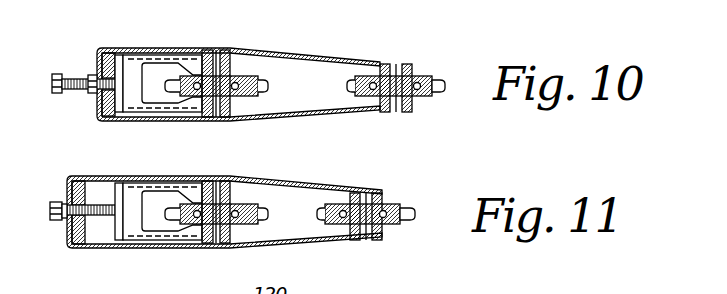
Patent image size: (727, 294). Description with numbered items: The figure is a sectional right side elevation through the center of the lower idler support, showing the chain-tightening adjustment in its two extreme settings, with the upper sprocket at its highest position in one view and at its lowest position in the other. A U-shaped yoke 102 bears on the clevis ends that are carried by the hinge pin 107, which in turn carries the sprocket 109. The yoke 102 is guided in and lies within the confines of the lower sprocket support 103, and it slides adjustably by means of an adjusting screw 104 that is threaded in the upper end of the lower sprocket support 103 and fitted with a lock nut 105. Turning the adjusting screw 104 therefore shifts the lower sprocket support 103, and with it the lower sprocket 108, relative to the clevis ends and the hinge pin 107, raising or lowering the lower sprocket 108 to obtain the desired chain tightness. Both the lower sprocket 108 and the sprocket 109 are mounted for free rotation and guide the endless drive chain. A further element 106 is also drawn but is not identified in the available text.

In FIG. 10, the U-shaped yoke 102 is at (160, 54).
In FIG. 11, the U-shaped yoke 102 is at (152, 183).
In FIG. 10, the lower sprocket support 103 is at (280, 51).
In FIG. 11, the lower sprocket support 103 is at (298, 186).
In FIG. 10, the adjusting screw 104 is at (67, 91).
In FIG. 11, the adjusting screw 104 is at (100, 217).
In FIG. 10, the lock nut 105 is at (95, 72).
In FIG. 11, the lock nut 105 is at (62, 203).
In FIG. 10, the end bearing support 106 is at (393, 63).
In FIG. 11, the end bearing support 106 is at (370, 194).
In FIG. 10, the hinge pin 107 is at (215, 52).
In FIG. 11, the hinge pin 107 is at (213, 181).
In FIG. 10, the lower sprocket 108 is at (436, 82).
In FIG. 11, the lower sprocket 108 is at (410, 211).
In FIG. 10, the sprocket 109 is at (263, 86).
In FIG. 11, the sprocket 109 is at (264, 214).